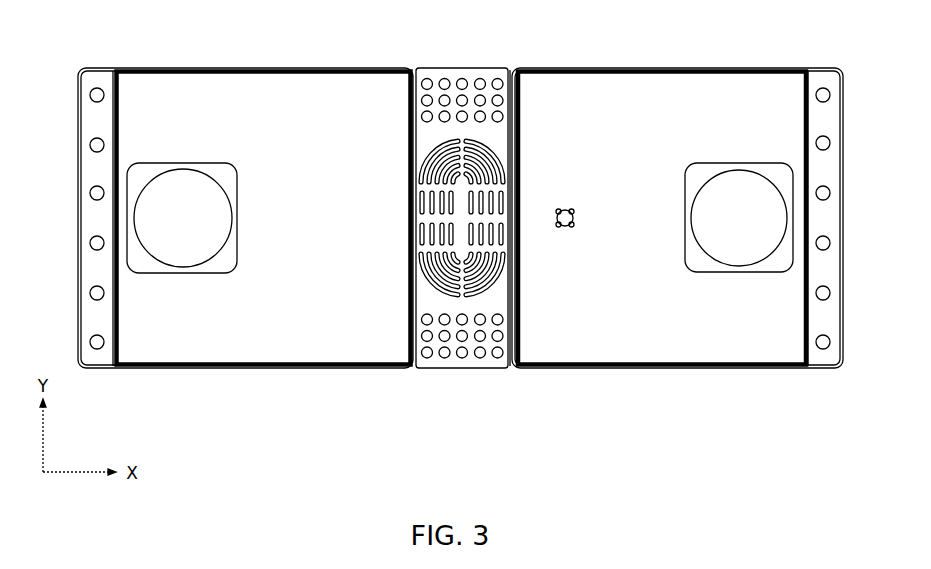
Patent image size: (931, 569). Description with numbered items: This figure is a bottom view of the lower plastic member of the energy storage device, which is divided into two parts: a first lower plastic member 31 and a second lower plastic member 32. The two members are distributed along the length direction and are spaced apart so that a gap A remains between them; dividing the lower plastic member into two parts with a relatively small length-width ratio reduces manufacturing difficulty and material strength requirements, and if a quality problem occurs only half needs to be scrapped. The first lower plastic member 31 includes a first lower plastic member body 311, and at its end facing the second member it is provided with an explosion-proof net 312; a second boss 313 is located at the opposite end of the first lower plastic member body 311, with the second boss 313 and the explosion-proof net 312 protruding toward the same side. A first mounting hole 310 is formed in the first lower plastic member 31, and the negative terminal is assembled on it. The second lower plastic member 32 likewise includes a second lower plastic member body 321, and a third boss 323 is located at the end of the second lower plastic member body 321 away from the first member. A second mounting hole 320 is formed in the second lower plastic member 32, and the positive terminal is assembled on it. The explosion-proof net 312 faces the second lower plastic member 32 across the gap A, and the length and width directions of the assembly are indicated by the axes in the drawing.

The first lower plastic member 31 is at (317, 63).
The second lower plastic member 32 is at (664, 63).
The first mounting hole 310 is at (189, 270).
The first lower plastic member body 311 is at (300, 305).
The explosion-proof net 312 is at (433, 300).
The second boss 313 is at (98, 305).
The second mounting hole 320 is at (730, 270).
The second lower plastic member body 321 is at (612, 305).
The third boss 323 is at (812, 305).
The gap A is at (511, 380).